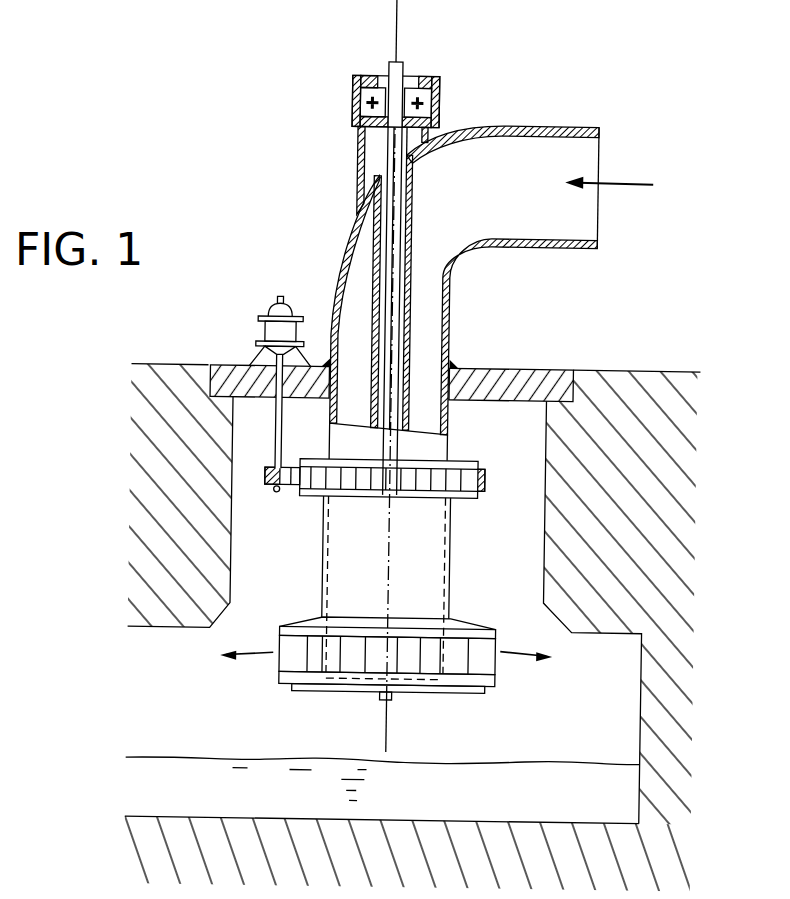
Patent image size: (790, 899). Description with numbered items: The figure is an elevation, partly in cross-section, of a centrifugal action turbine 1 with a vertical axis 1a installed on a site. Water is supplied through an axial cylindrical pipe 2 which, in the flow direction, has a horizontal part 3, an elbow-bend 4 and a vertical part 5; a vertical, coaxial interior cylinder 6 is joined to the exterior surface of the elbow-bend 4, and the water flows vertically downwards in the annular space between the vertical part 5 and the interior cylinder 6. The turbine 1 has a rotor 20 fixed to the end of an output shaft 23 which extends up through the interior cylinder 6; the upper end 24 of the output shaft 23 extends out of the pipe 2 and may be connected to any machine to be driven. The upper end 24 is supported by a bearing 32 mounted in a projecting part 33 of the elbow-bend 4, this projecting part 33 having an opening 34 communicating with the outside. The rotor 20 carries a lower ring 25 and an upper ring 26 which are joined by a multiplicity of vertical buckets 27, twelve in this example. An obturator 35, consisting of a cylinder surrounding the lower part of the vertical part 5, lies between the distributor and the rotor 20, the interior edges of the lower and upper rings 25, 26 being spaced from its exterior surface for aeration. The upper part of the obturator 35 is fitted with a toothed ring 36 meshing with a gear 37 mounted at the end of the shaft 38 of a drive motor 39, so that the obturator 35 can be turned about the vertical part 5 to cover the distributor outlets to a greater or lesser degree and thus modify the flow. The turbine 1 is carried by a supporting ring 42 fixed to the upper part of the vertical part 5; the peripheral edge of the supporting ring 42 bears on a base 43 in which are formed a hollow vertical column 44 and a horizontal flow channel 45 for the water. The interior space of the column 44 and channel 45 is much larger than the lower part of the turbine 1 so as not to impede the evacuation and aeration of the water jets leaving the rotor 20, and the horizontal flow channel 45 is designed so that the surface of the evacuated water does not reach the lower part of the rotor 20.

The centrifugal action turbine 1 is at (258, 243).
The vertical axis 1a is at (390, 30).
The axial cylindrical pipe 2 is at (452, 302).
The horizontal part 3 is at (549, 124).
The elbow-bend 4 is at (339, 233).
The vertical part 5 is at (418, 447).
The interior cylinder 6 is at (407, 342).
The rotor 20 is at (383, 662).
The output shaft 23 is at (390, 282).
The upper end 24 is at (397, 67).
The lower ring 25 is at (299, 676).
The upper ring 26 is at (296, 628).
The vertical buckets 27 is at (486, 656).
The bearing 32 is at (419, 97).
The projecting part 33 is at (348, 97).
The opening 34 is at (357, 163).
The obturator 35 is at (357, 553).
The toothed ring 36 is at (476, 492).
The gear 37 is at (278, 492).
The shaft 38 is at (276, 435).
The drive motor 39 is at (276, 334).
The supporting ring 42 is at (530, 381).
The base 43 is at (611, 582).
The hollow vertical column 44 is at (514, 561).
The horizontal flow channel 45 is at (181, 780).